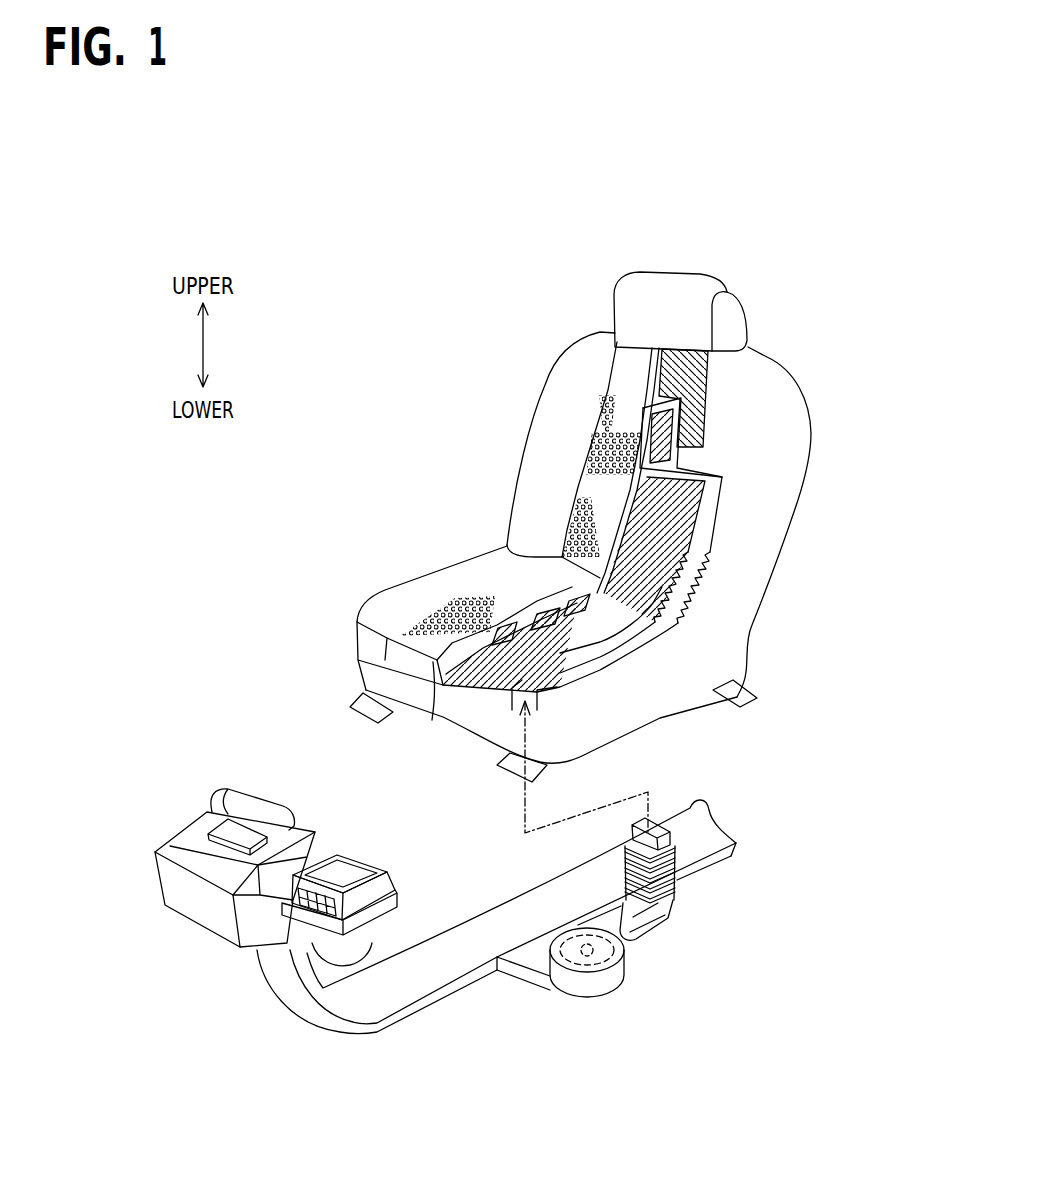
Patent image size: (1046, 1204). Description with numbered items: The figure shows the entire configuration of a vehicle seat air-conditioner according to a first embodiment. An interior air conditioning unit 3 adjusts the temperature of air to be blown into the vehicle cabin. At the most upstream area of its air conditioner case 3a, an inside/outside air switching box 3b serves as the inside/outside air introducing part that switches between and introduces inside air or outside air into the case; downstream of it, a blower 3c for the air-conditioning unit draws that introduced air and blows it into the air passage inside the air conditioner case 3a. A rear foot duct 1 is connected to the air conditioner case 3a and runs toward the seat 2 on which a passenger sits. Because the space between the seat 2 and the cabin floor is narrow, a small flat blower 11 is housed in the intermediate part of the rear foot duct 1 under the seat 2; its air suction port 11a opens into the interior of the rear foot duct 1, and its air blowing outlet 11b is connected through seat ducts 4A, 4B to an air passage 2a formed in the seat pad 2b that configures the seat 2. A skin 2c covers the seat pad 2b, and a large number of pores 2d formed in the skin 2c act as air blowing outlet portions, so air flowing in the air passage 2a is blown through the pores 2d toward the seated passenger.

The rear foot duct 1 is at (515, 924).
The seat 2 is at (615, 552).
The air passage 2a is at (680, 437).
The seat pad 2b is at (680, 390).
The skin 2c is at (593, 487).
The pores 2d is at (590, 437).
The interior air conditioning unit 3 is at (261, 861).
The air conditioner case 3a is at (157, 879).
The inside/outside air switching box 3b is at (352, 856).
The blower for the air-conditioning unit 3c is at (397, 906).
The seat duct 4A is at (673, 893).
The seat duct 4B is at (647, 647).
The blower 11 is at (570, 970).
The air suction port 11a is at (622, 953).
The air blowing outlet 11b is at (645, 928).